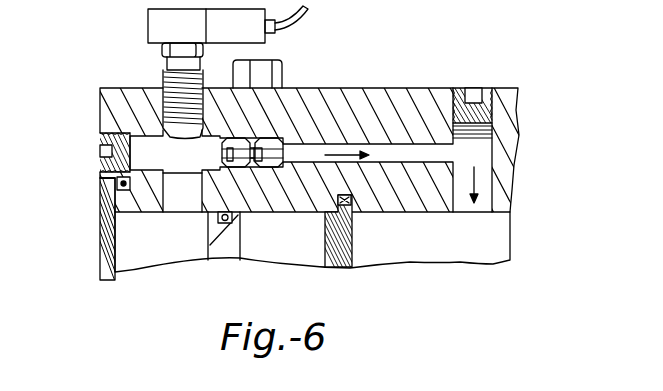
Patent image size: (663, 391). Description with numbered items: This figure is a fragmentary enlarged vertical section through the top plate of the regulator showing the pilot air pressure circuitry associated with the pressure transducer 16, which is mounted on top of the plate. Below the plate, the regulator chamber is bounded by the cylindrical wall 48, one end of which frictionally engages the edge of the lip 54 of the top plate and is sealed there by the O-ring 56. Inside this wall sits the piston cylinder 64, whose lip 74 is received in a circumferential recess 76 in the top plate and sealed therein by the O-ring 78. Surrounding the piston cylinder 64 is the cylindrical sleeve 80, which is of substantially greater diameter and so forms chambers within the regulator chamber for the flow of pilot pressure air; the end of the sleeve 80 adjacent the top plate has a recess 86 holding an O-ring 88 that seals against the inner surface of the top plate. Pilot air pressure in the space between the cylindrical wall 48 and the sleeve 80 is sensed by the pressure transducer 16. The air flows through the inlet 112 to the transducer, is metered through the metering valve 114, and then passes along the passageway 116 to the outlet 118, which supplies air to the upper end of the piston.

The pressure transducer 16 is at (149, 17).
The cylindrical wall 48 is at (102, 245).
The lip 54 is at (102, 188).
The O-ring 56 is at (112, 198).
The piston cylinder 64 is at (343, 248).
The lip 74 is at (352, 213).
The circumferential recess 76 is at (353, 192).
The O-ring 78 is at (342, 199).
The cylindrical sleeve 80 is at (217, 253).
The recess 86 is at (228, 210).
The O-ring 88 is at (237, 208).
The inlet 112 is at (184, 190).
The metering valve 114 is at (258, 142).
The passageway 116 is at (308, 150).
The outlet 118 is at (482, 183).